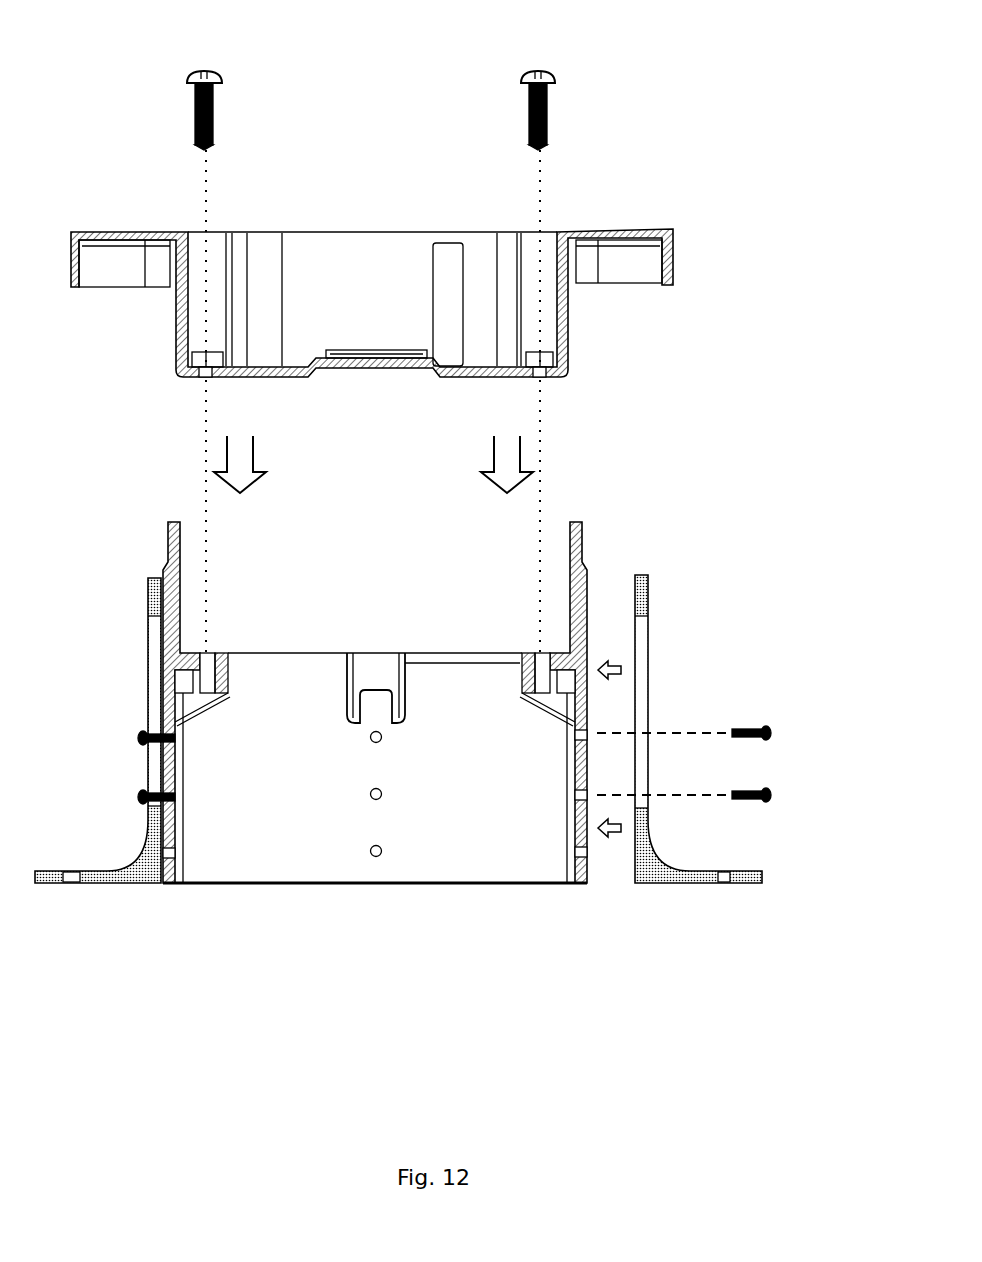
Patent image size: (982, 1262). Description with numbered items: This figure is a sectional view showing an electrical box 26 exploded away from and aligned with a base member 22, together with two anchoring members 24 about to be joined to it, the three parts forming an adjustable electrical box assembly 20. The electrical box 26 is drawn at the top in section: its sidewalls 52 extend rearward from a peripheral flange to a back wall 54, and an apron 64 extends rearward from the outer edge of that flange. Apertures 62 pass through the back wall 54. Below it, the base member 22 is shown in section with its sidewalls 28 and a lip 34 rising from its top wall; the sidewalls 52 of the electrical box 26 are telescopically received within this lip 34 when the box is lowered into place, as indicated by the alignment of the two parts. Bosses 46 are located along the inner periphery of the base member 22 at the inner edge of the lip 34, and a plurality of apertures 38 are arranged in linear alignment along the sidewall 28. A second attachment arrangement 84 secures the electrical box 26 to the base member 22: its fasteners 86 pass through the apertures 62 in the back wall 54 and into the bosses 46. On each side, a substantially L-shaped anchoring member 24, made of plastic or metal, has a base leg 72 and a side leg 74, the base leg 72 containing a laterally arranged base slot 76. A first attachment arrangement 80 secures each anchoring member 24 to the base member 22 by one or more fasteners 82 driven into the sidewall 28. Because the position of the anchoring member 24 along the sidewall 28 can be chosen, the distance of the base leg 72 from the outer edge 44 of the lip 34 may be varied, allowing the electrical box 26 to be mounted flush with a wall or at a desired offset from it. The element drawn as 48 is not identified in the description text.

The adjustable electrical box assembly 20 is at (203, 965).
The base member 22 is at (415, 654).
The anchoring member 24 is at (398, 759).
The electrical box 26 is at (418, 268).
The sidewall 28 is at (582, 765).
The lip 34 is at (167, 545).
The apertures 38 is at (175, 797).
The outer edge 44 is at (173, 520).
The bosses 46 is at (228, 668).
The spring latch 48 is at (207, 678).
The sidewalls 52 is at (381, 304).
The back wall 54 is at (492, 380).
The apertures 62 is at (203, 382).
The apron 64 is at (672, 258).
The base leg 72 is at (710, 878).
The side leg 74 is at (644, 592).
The base slot 76 is at (727, 878).
The first attachment arrangement 80 is at (780, 700).
The fasteners 82 is at (158, 737).
The second attachment arrangement 84 is at (150, 95).
The fasteners 86 is at (213, 118).